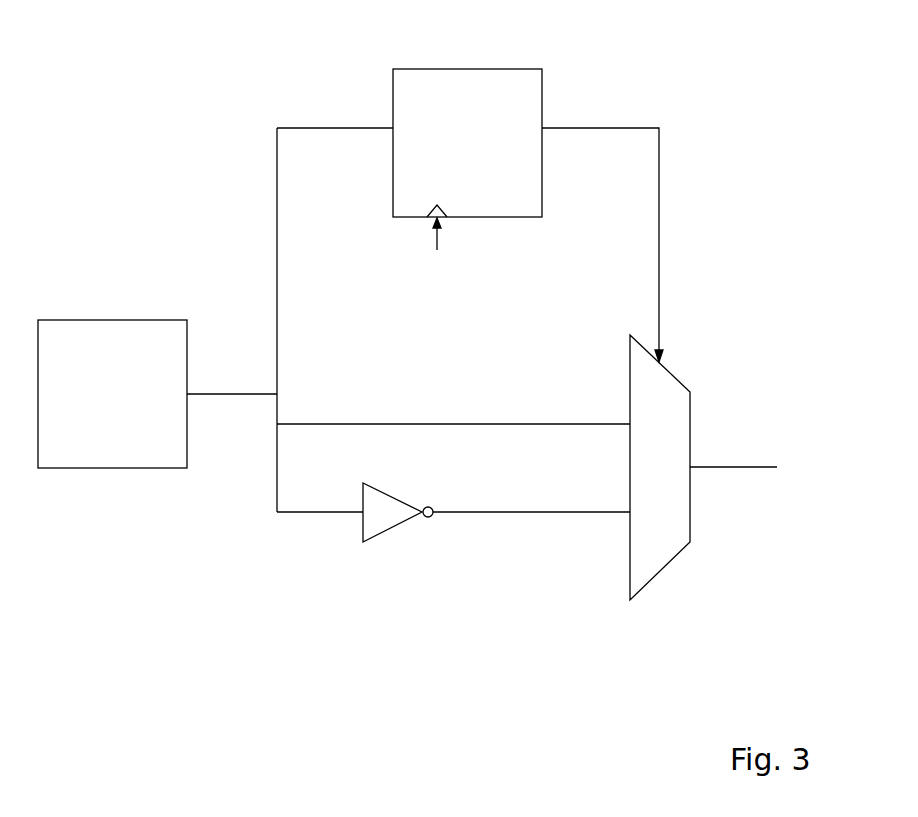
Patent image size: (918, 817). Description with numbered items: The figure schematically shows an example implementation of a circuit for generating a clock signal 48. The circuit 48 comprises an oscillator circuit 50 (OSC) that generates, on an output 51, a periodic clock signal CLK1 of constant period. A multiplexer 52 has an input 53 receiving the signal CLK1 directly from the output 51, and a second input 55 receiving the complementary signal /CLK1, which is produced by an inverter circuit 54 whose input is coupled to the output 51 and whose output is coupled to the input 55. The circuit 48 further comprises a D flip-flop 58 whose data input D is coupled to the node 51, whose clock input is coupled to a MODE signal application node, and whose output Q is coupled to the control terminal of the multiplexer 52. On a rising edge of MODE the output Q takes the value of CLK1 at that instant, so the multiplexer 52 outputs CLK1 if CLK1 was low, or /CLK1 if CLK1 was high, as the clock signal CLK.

The circuit for generating a clock signal 48 is at (748, 76).
The oscillator circuit 50 is at (75, 320).
The output 51 is at (190, 398).
The multiplexer 52 is at (662, 600).
The input 53 is at (628, 428).
The inverter circuit 54 is at (388, 530).
The input 55 is at (628, 516).
The flip-flop 58 is at (515, 68).